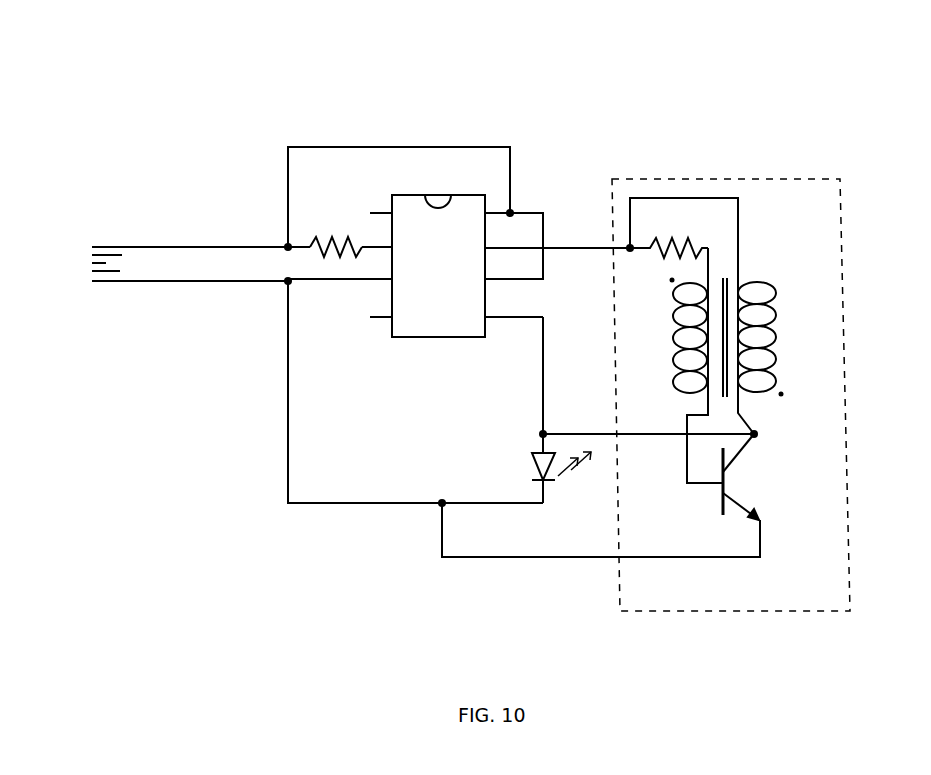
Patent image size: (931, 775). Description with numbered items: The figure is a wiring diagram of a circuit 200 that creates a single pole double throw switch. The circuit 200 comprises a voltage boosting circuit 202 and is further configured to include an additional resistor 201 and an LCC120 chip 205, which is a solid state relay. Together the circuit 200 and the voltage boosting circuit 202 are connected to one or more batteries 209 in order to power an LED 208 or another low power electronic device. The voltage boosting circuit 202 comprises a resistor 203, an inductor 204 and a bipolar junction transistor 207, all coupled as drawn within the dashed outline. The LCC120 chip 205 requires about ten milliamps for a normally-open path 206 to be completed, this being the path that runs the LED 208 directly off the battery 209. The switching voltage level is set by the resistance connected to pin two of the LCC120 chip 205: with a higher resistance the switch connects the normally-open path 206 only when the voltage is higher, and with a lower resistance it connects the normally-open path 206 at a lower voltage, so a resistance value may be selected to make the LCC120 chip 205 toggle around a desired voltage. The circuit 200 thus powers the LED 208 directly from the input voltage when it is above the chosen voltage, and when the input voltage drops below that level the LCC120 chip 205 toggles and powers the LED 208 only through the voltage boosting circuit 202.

The circuit 200 is at (443, 108).
The additional resistor 201 is at (336, 232).
The voltage boosting circuit 202 is at (700, 168).
The resistor 203 is at (669, 233).
The inductor 204 is at (722, 340).
The LCC120 chip 205 is at (438, 266).
The normally-open path 206 is at (562, 375).
The bipolar junction transistor 207 is at (716, 477).
The LED 208 is at (538, 468).
The battery 209 is at (78, 255).